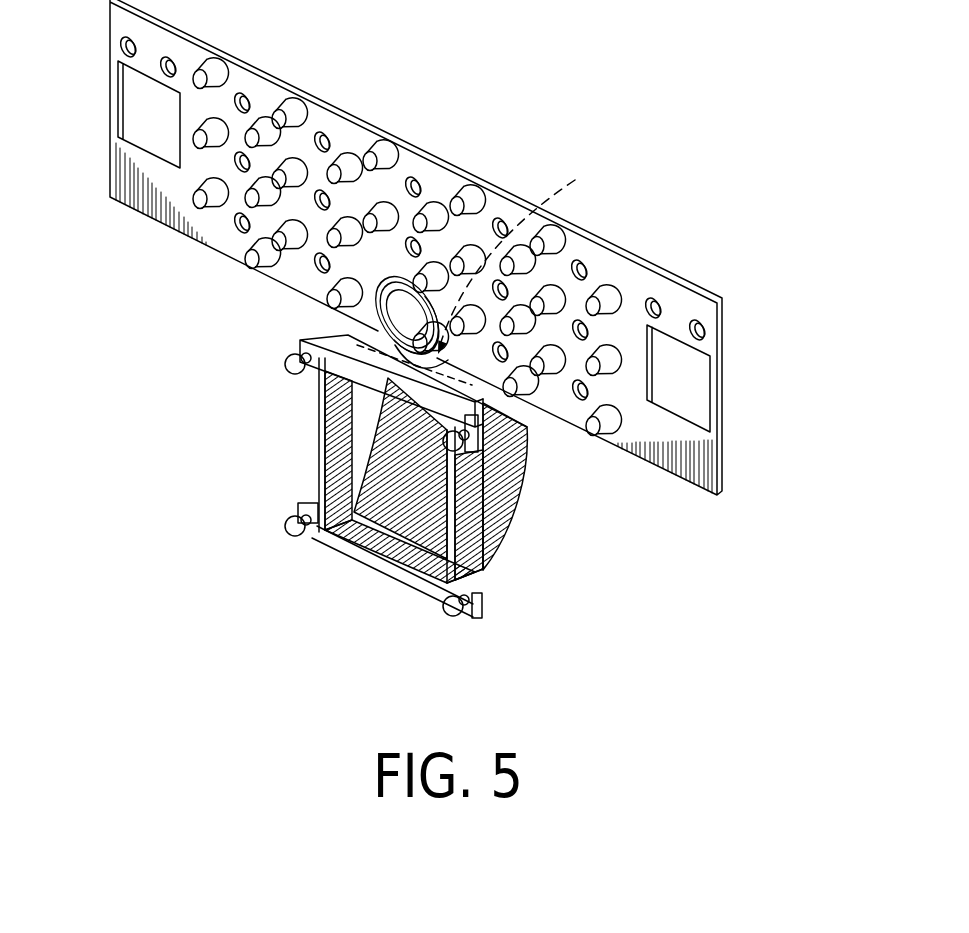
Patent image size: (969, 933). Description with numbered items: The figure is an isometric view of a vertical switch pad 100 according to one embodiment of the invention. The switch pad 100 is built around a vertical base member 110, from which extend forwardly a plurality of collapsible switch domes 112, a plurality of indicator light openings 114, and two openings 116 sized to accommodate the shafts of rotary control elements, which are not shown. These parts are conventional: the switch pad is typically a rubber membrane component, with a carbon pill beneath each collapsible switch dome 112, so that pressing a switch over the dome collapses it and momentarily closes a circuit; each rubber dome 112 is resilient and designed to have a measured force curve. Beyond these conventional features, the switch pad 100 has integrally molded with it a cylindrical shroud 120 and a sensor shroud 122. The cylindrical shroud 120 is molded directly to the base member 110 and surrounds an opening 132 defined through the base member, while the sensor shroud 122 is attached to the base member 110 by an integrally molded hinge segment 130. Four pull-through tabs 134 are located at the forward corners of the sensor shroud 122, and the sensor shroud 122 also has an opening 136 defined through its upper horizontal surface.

The switch pad 100 is at (793, 327).
The vertical base member 110 is at (170, 188).
The collapsible switch dome 112 is at (614, 300).
The indicator light opening 114 is at (594, 261).
The opening 116 is at (146, 102).
The cylindrical shroud 120 is at (399, 278).
The sensor shroud 122 is at (505, 523).
The hinge segment 130 is at (467, 376).
The opening 132 is at (398, 326).
The pull-through tab 134 is at (286, 369).
The opening 136 is at (496, 268).